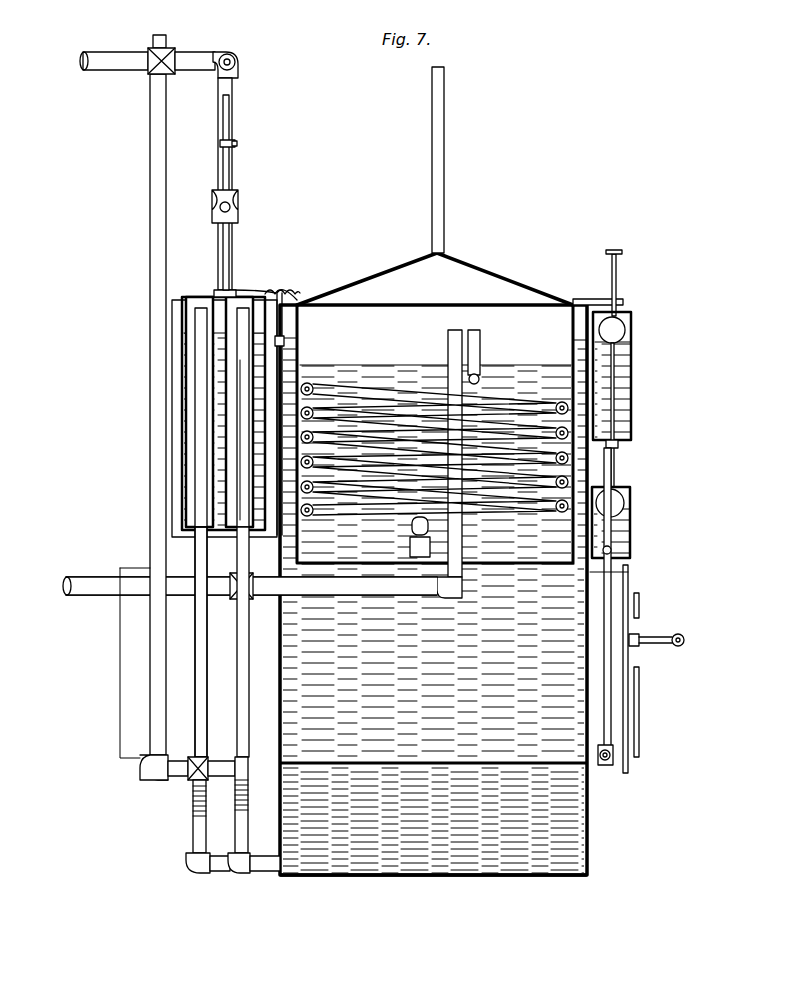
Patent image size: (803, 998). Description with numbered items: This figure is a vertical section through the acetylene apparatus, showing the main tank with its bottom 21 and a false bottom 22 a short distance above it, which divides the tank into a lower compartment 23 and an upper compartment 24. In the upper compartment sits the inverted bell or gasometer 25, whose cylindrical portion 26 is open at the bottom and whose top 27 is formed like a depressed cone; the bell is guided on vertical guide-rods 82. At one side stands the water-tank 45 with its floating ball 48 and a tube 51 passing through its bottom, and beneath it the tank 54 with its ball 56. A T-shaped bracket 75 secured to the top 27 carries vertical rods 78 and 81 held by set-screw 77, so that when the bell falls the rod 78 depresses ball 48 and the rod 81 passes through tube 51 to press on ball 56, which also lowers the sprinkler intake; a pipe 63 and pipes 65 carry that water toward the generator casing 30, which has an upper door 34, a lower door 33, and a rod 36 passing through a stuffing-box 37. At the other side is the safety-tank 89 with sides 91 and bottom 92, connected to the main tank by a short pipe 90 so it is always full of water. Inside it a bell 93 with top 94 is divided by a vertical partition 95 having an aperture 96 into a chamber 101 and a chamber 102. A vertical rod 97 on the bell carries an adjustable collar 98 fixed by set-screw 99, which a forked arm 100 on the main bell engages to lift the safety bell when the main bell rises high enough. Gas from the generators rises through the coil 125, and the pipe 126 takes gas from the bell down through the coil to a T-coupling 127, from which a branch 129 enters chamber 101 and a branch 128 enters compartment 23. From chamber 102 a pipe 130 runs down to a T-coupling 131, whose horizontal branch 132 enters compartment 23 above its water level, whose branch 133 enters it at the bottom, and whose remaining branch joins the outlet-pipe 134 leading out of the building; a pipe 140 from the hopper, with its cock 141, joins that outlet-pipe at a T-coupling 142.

The bottom 21 is at (398, 877).
The false bottom 22 is at (408, 766).
The lower compartment 23 is at (586, 835).
The upper compartment 24 is at (433, 590).
The bell 25 is at (435, 437).
The cylindrical portion 26 is at (300, 333).
The top 27 is at (470, 270).
The casing 30 is at (596, 653).
The lower door 33 is at (640, 703).
The upper door 34 is at (640, 612).
The rod 36 is at (681, 636).
The stuffing-box 37 is at (640, 638).
The water-tank 45 is at (633, 362).
The floating ball 48 is at (633, 328).
The tube 51 is at (633, 395).
The tank 54 is at (632, 516).
The ball 56 is at (632, 494).
The pipe 63 is at (629, 580).
The pipes 65 is at (605, 766).
The T-shaped bracket 75 is at (580, 298).
The set-screw 77 is at (625, 302).
The rod 78 is at (617, 272).
The rod 81 is at (616, 455).
The guide-rods 82 is at (444, 152).
The safety-tank 89 is at (172, 527).
The short pipe 90 is at (305, 295).
The sides 91 is at (172, 402).
The bottom 92 is at (222, 532).
The bell 93 is at (185, 443).
The top 94 is at (280, 290).
The vertical partition 95 is at (183, 360).
The aperture 96 is at (226, 448).
The vertical rod 97 is at (233, 163).
The adjustable collar 98 is at (220, 143).
The set-screw 99 is at (238, 143).
The forked arm 100 is at (283, 292).
The chamber 101 is at (243, 300).
The chamber 102 is at (199, 300).
The coil 125 is at (488, 410).
The pipe 126 is at (448, 353).
The T-coupling 127 is at (255, 597).
The branch 128 is at (250, 689).
The branch 129 is at (242, 484).
The pipe 130 is at (196, 690).
The T-coupling 131 is at (186, 778).
The horizontal branch 132 is at (260, 772).
The branch 133 is at (194, 825).
The outlet-pipe 134 is at (151, 150).
The pipe 140 is at (233, 92).
The cock 141 is at (239, 208).
The T-coupling 142 is at (150, 76).